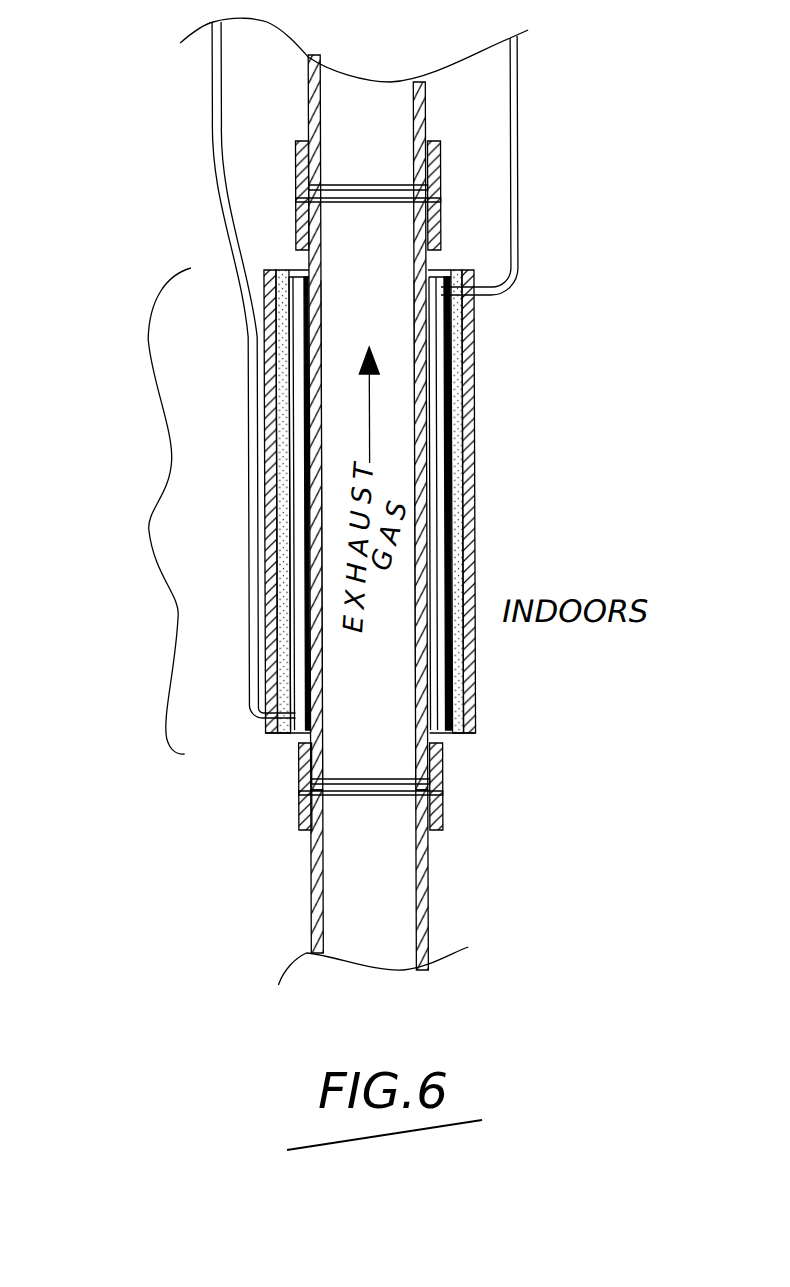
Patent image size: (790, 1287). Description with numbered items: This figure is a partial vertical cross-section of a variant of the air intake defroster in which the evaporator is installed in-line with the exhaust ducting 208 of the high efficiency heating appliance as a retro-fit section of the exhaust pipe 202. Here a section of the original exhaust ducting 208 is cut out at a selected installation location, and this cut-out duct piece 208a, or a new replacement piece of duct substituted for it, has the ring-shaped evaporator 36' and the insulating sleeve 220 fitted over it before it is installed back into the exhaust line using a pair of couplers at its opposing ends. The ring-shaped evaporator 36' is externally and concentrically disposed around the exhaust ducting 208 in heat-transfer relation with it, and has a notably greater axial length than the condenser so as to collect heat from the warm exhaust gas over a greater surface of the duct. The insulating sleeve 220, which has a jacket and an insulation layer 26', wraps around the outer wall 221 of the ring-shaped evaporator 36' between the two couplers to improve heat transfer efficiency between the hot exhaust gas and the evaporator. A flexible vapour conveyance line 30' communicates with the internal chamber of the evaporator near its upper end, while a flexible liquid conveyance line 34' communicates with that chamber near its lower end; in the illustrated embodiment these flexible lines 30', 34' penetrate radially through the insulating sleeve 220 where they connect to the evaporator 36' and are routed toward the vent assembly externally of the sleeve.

The exhaust pipe 202 is at (310, 88).
The exhaust ducting 208 is at (422, 890).
The cut-out duct piece 208a is at (420, 507).
The insulating sleeve 220 is at (428, 524).
The wall 221 is at (138, 511).
The insulation layer 26' is at (419, 503).
The flexible vapour conveyance line 30' is at (493, 191).
The flexible liquid conveyance line 34' is at (235, 370).
The ring-shaped evaporator 36' is at (440, 503).